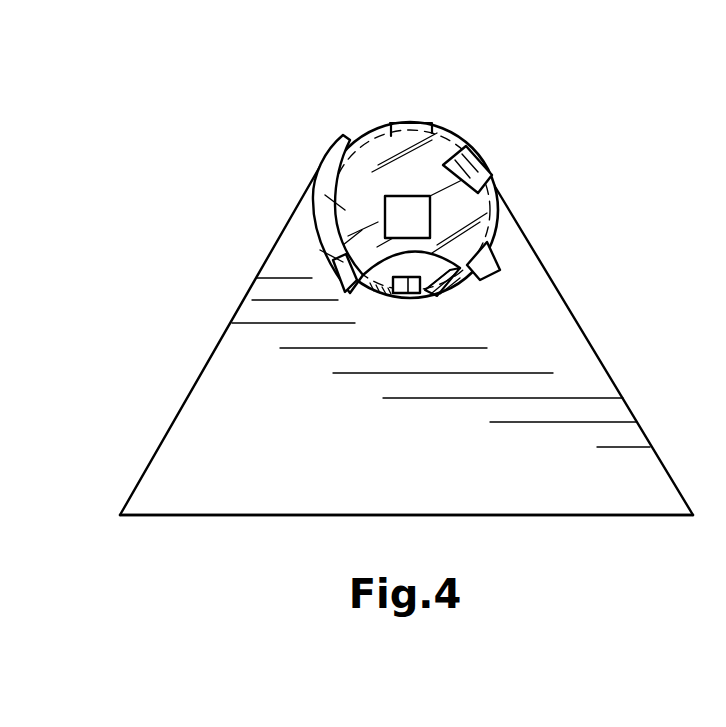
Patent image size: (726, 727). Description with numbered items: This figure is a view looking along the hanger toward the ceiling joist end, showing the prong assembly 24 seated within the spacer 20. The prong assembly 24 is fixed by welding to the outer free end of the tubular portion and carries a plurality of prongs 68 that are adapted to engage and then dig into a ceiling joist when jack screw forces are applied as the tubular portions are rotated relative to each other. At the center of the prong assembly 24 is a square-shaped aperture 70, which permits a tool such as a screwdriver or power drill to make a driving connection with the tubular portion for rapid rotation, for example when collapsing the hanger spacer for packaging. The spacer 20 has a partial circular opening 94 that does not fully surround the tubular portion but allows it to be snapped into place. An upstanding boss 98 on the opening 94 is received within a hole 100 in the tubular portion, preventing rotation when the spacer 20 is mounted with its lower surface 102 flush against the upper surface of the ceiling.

The spacer 20 is at (562, 358).
The prong assembly 24 is at (415, 173).
The prongs 68 is at (330, 190).
The square-shaped aperture 70 is at (405, 220).
The partial circular opening 94 is at (443, 290).
The upstanding boss 98 is at (406, 294).
The hole 100 is at (395, 294).
The lower surface 102 is at (298, 517).